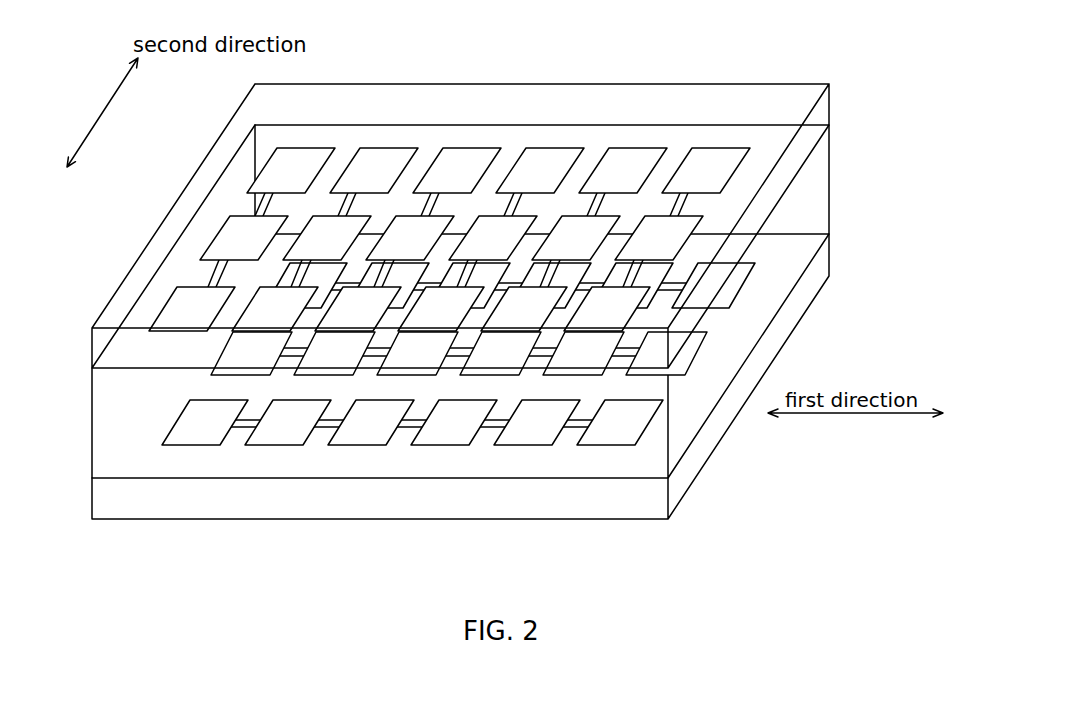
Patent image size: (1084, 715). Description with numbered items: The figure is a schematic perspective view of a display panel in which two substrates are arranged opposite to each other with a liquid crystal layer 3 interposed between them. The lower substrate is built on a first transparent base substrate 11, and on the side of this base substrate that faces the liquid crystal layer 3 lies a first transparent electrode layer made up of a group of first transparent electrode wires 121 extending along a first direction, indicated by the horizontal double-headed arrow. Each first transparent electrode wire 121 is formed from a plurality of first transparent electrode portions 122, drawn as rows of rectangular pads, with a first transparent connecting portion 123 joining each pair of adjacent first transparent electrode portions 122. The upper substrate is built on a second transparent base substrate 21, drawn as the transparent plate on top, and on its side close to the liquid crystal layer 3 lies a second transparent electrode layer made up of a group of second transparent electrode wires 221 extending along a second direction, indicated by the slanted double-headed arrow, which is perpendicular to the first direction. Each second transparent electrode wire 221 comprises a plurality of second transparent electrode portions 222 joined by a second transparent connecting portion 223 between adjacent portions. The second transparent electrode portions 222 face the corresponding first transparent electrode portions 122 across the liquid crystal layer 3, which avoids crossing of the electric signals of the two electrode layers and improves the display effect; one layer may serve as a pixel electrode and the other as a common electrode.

The second transparent base substrate 21 is at (830, 93).
The liquid crystal layer 3 is at (830, 177).
The first transparent base substrate 11 is at (724, 433).
The second transparent electrode wires 221 is at (473, 148).
The second transparent electrode portions 222 is at (207, 298).
The second transparent connecting portion 223 is at (256, 205).
The first transparent electrode wires 121 is at (737, 277).
The first transparent electrode portions 122 is at (677, 353).
The first transparent connecting portion 123 is at (568, 428).